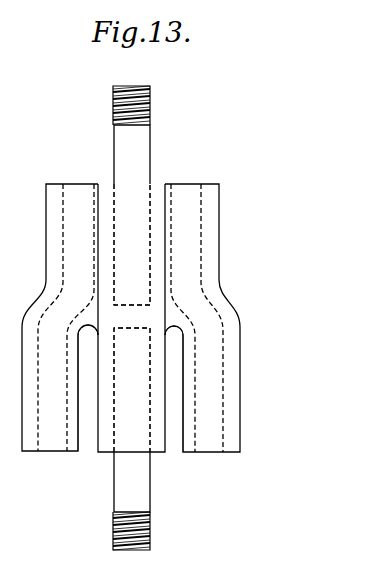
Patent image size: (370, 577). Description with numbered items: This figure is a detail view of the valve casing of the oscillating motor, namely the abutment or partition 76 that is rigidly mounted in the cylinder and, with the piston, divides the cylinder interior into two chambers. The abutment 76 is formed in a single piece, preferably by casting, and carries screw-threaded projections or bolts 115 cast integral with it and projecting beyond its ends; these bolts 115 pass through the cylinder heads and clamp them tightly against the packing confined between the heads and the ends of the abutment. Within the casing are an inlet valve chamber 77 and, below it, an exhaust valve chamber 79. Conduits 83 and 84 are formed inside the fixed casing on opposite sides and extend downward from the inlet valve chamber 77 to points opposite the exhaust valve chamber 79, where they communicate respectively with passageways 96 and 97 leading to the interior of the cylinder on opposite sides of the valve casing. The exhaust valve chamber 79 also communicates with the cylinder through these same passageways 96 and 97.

The screw-threaded projections or bolts 115 is at (145, 141).
The abutment or partition 76 is at (155, 197).
The inlet valve chamber 77 is at (132, 222).
The exhaust valve chamber 79 is at (128, 420).
The conduit 83 is at (73, 243).
The conduit 84 is at (190, 241).
The passageway 96 is at (86, 389).
The passageway 97 is at (177, 417).